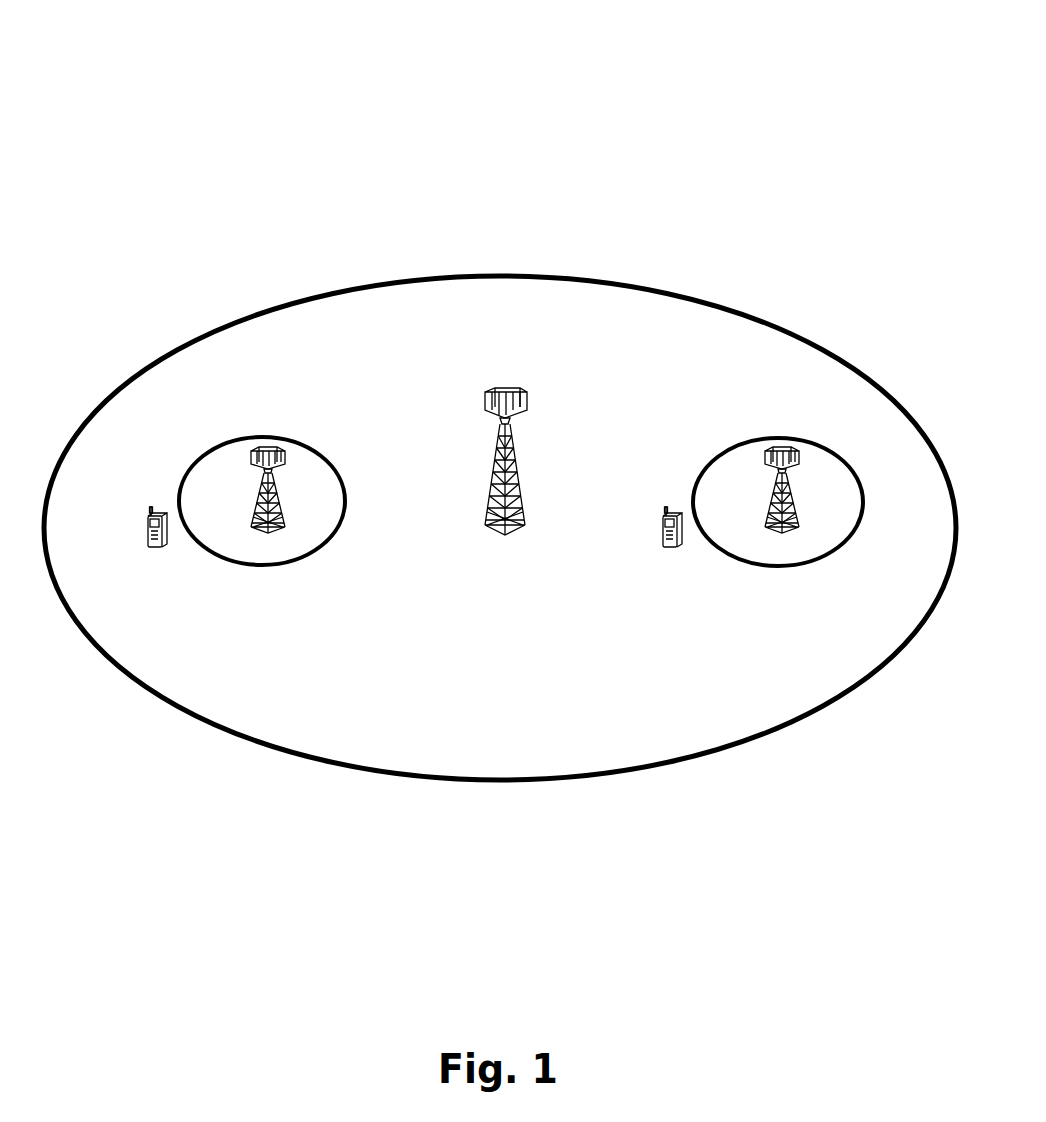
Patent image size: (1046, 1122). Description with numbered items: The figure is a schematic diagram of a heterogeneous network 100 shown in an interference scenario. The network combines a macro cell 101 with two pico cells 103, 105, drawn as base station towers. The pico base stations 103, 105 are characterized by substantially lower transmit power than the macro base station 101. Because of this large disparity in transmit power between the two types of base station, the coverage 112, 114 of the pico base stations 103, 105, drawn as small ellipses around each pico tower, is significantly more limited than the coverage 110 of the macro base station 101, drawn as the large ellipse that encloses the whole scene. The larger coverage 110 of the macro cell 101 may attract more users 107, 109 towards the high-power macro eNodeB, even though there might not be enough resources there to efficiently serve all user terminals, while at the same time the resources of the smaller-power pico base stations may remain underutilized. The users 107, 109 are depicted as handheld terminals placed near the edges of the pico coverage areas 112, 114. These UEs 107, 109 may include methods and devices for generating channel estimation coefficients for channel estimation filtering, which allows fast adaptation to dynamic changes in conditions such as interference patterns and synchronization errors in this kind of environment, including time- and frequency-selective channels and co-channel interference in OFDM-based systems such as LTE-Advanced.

The heterogeneous network 100 is at (340, 112).
The coverage of the macro base station 110 is at (515, 268).
The macro cell 101 is at (493, 562).
The coverage of the pico base station 112 is at (264, 430).
The pico cell 103 is at (262, 558).
The coverage of the pico base station 114 is at (728, 443).
The pico cell 105 is at (780, 560).
The user 107 is at (158, 562).
The user 109 is at (665, 562).